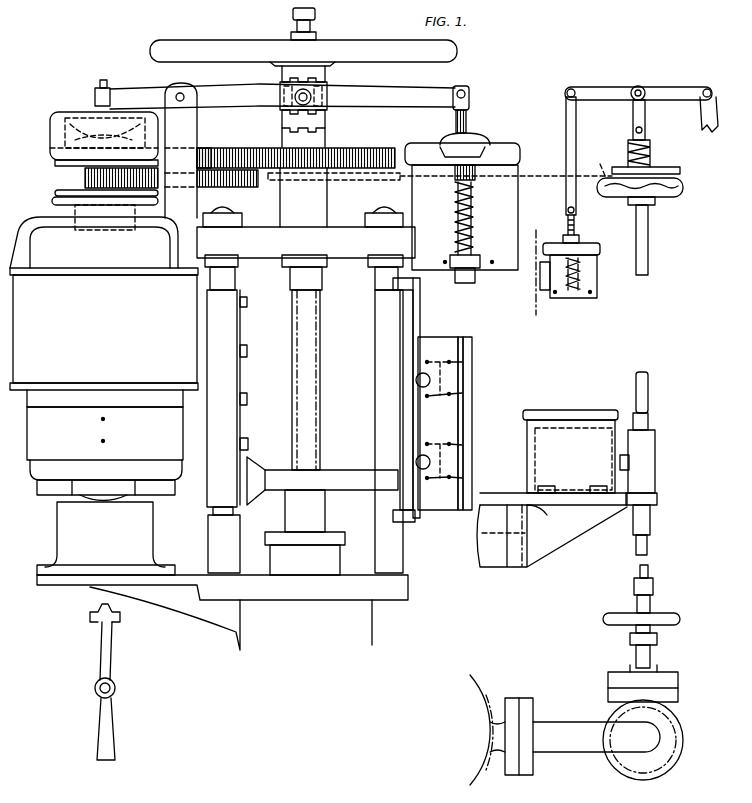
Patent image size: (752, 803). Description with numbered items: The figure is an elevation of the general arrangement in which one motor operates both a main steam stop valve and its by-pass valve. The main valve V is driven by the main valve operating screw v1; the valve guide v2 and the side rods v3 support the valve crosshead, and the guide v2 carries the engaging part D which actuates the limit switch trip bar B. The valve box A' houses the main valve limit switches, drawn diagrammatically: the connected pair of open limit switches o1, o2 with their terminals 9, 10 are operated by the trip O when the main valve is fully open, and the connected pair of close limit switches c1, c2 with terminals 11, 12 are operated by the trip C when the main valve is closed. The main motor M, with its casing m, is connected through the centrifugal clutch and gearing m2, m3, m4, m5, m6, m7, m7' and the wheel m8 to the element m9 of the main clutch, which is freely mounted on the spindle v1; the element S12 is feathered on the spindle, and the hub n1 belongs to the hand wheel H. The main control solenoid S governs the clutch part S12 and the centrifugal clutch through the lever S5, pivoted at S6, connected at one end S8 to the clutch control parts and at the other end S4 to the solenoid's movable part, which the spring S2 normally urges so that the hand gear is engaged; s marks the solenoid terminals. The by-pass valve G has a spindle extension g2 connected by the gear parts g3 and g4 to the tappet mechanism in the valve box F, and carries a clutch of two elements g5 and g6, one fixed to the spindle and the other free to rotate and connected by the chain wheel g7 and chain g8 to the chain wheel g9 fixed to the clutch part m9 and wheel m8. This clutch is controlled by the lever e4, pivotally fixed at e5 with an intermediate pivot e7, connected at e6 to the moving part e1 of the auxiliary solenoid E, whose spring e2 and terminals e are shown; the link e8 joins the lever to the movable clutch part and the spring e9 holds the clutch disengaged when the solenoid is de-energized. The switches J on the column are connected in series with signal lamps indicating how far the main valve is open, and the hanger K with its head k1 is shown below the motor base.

The hand wheel H is at (242, 46).
The wheel hub n1 is at (326, 75).
The main clutch element S12 is at (326, 117).
The main clutch element m9 is at (327, 140).
The wheel m8 is at (378, 150).
The centrifugal clutch and gearing part m7 is at (228, 192).
The pinion portion m7' is at (217, 145).
The chain wheel g9 is at (328, 181).
The lever pivot S6 is at (183, 93).
The lever S5 is at (420, 95).
The lever end S8 is at (97, 107).
The lever end S4 is at (470, 93).
The main control solenoid S is at (505, 216).
The spring S2 is at (455, 212).
The contacts s is at (492, 262).
The lever e4 is at (608, 90).
The lever end e6 is at (571, 89).
The pivot e7 is at (641, 87).
The lever pivot end e5 is at (712, 100).
The link e8 is at (646, 122).
The spring e9 is at (651, 153).
The chain wheel g7 is at (682, 170).
The clutch element g6 is at (684, 187).
The clutch element g5 is at (660, 199).
The chain g8 is at (603, 172).
The extension rod g2 is at (649, 258).
The auxiliary solenoid E is at (597, 282).
The moving part of solenoid e1 is at (590, 247).
The spring e2 is at (582, 271).
The terminal connections e is at (560, 296).
The centrifugal clutch part m4 is at (58, 115).
The centrifugal clutch part m3 is at (55, 158).
The centrifugal clutch and gearing part m6 is at (86, 178).
The centrifugal clutch and gearing part m5 is at (56, 193).
The centrifugal clutch part m2 is at (58, 202).
The main motor M is at (104, 396).
The motor casing m is at (104, 441).
The main valve V is at (365, 625).
The hanger head k1 is at (118, 622).
The hanger arm K is at (110, 662).
The side rods v3 is at (238, 282).
The switches J is at (247, 351).
The main valve operating screw v1 is at (320, 366).
The valve guide v2 is at (280, 478).
The engaging part D is at (388, 486).
The limit switch trip bar B is at (419, 320).
The valve box A' is at (445, 414).
The trip O is at (416, 379).
The open limit switch o1 is at (438, 370).
The open limit switch o2 is at (438, 406).
The terminal 9 is at (462, 362).
The terminal 10 is at (462, 393).
The trip C is at (416, 460).
The close limit switch c1 is at (438, 452).
The close limit switch c2 is at (438, 489).
The terminal 11 is at (462, 445).
The terminal 12 is at (462, 478).
The valve box F is at (537, 432).
The gear g3 is at (656, 490).
The gear g4 is at (630, 466).
The by-pass valve G is at (668, 732).